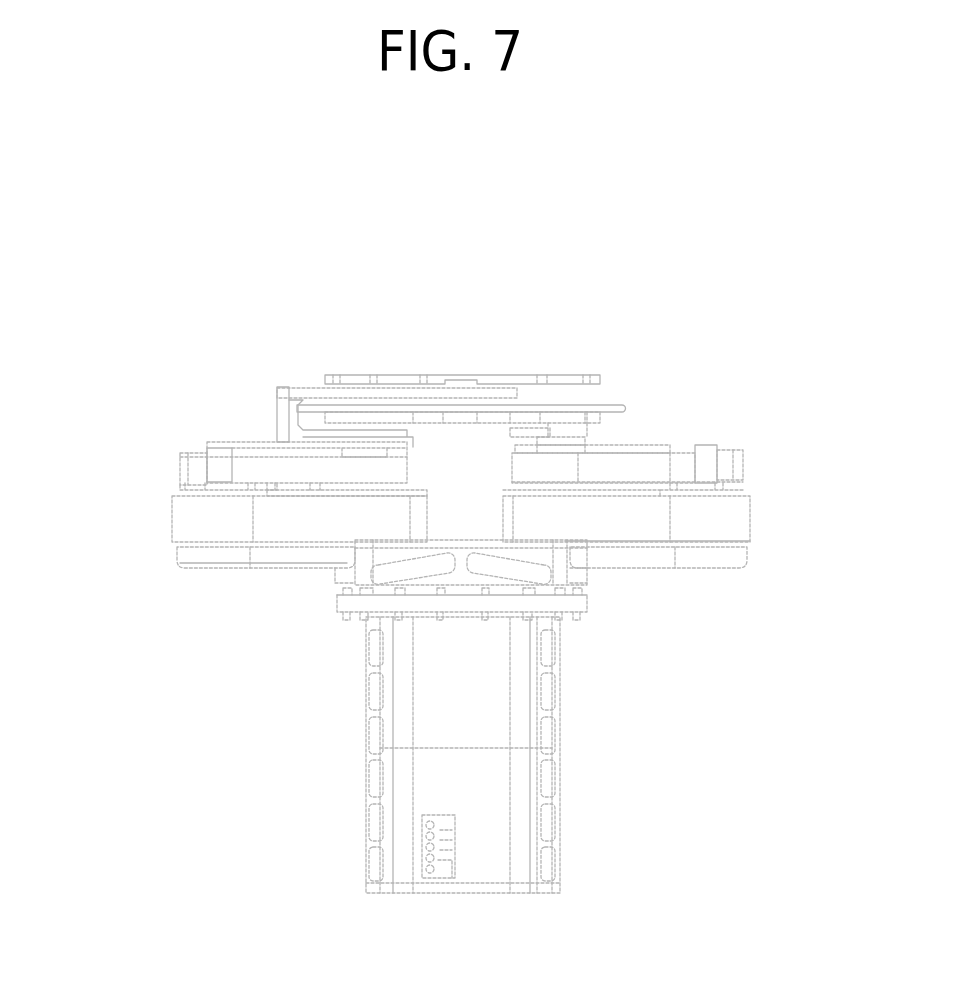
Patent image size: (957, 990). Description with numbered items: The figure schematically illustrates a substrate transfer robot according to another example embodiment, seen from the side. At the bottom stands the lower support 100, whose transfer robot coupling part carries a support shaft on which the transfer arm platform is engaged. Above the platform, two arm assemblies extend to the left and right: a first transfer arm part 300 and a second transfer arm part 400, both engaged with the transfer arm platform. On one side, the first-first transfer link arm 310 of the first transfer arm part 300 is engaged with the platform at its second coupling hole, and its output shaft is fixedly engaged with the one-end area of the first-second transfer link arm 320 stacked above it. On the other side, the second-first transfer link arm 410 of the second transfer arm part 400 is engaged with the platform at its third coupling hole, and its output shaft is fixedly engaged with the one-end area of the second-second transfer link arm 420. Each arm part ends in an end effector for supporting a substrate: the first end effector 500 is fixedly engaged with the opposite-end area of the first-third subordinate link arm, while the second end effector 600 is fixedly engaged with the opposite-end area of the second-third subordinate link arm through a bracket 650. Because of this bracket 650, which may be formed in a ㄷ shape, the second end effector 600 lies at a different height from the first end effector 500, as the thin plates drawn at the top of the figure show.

The lower support 100 is at (550, 715).
The first transfer arm part 300 is at (691, 466).
The (1_1)-st transfer link arm 310 is at (742, 518).
The (1_2)-nd transfer link arm 320 is at (643, 467).
The second transfer arm part 400 is at (236, 467).
The (2_1)-st transfer link arm 410 is at (183, 518).
The (2_2)-nd transfer link arm 420 is at (278, 470).
The first end effector 500 is at (610, 405).
The second end effector 600 is at (493, 380).
The bracket 650 is at (285, 402).